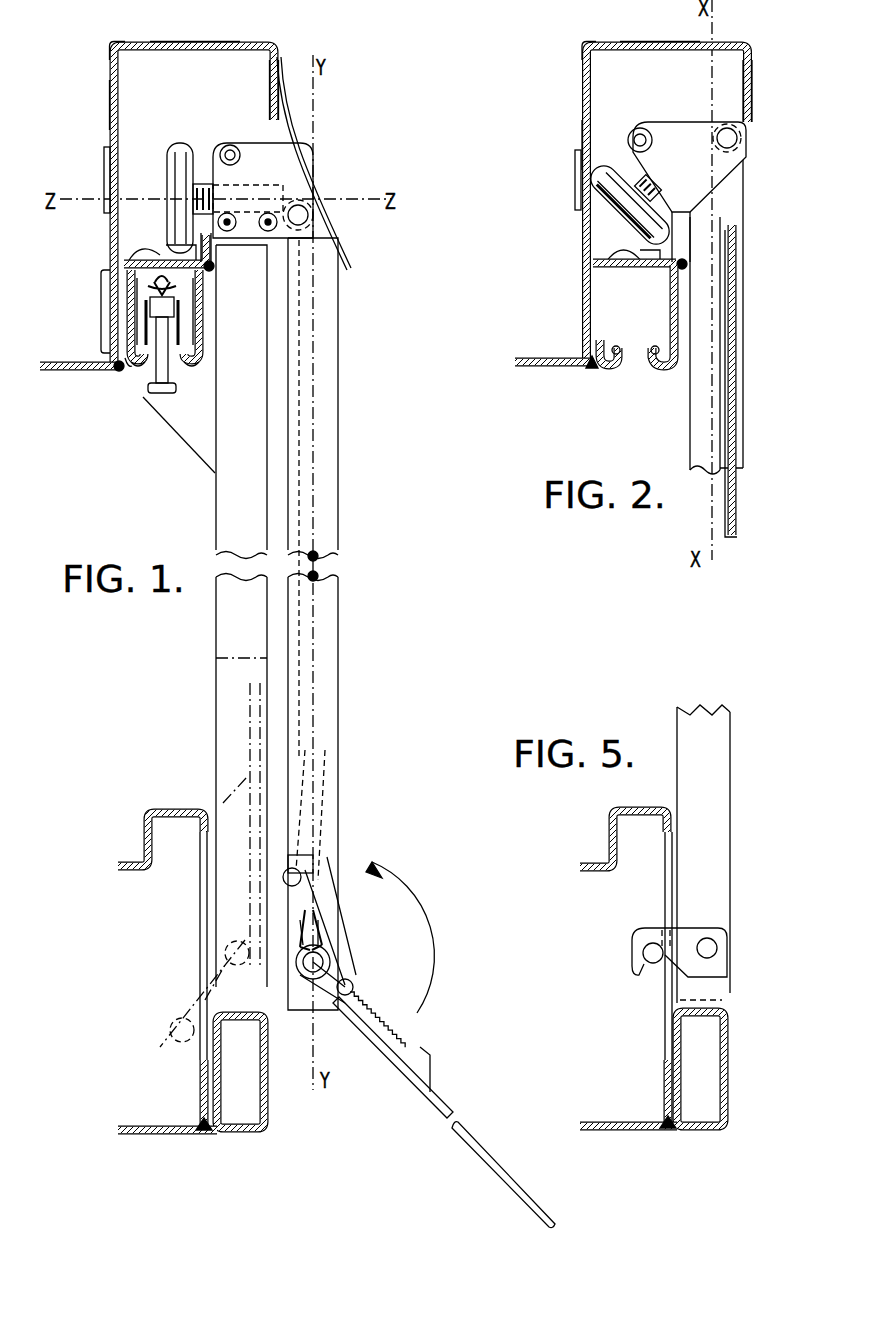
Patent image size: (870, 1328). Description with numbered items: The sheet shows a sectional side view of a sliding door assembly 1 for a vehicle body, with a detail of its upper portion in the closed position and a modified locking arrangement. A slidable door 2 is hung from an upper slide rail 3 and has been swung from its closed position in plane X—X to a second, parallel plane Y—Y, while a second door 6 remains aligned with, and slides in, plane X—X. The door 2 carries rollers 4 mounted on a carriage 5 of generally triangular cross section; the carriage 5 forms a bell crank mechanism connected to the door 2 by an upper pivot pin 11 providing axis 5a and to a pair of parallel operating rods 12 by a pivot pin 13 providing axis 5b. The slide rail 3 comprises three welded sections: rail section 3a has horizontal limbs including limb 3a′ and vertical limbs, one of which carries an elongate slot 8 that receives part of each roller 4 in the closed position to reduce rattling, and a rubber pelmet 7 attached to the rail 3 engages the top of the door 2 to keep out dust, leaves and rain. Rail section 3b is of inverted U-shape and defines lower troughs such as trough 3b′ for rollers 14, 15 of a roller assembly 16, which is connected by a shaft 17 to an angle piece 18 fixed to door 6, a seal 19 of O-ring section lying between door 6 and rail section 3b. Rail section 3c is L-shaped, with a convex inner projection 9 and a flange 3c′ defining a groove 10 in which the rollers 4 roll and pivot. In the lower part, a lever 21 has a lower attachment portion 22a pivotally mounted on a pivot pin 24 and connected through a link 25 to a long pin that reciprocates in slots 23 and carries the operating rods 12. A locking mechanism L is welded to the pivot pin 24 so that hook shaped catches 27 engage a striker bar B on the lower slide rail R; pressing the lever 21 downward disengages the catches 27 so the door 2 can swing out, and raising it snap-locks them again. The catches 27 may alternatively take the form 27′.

In FIG. 1, the sliding door assembly 1 is at (190, 626).
In FIG. 1, the slidable door 2 is at (336, 436).
In FIG. 2, the slidable door 2 is at (740, 326).
In FIG. 1, the upper slide rail 3 is at (108, 133).
In FIG. 2, the upper slide rail 3 is at (540, 89).
In FIG. 1, the rail section 3a is at (115, 43).
In FIG. 2, the rail section 3a is at (570, 25).
In FIG. 1, the horizontal limb 3a′ is at (62, 371).
In FIG. 2, the horizontal limb 3a′ is at (535, 405).
In FIG. 1, the rail section 3b is at (133, 370).
In FIG. 2, the rail section 3b is at (617, 372).
In FIG. 1, the lower trough 3b′ is at (128, 372).
In FIG. 2, the lower trough 3b′ is at (590, 405).
In FIG. 1, the rail section 3c is at (121, 263).
In FIG. 2, the rail section 3c is at (547, 267).
In FIG. 1, the flange 3c′ is at (214, 246).
In FIG. 2, the flange 3c′ is at (684, 238).
In FIG. 1, the roller 4 is at (157, 136).
In FIG. 2, the roller 4 is at (538, 185).
In FIG. 1, the carriage 5 is at (260, 177).
In FIG. 2, the carriage 5 is at (737, 175).
In FIG. 1, the pivot axis 5a is at (238, 153).
In FIG. 2, the pivot axis 5a is at (648, 135).
In FIG. 1, the pivot axis 5b is at (309, 215).
In FIG. 2, the pivot axis 5b is at (737, 140).
In FIG. 1, the second door 6 is at (190, 524).
In FIG. 1, the rubber pelmet 7 is at (310, 200).
In FIG. 1, the elongate slot 8 is at (112, 190).
In FIG. 2, the elongate slot 8 is at (587, 156).
In FIG. 1, the inner projection 9 is at (136, 250).
In FIG. 2, the inner projection 9 is at (615, 299).
In FIG. 1, the groove 10 is at (146, 237).
In FIG. 2, the groove 10 is at (645, 299).
In FIG. 1, the upper pivot pin 11 is at (180, 106).
In FIG. 2, the upper pivot pin 11 is at (636, 104).
In FIG. 1, the operating rod 12 is at (310, 513).
In FIG. 2, the operating rod 12 is at (738, 521).
In FIG. 1, the pivot pin 13 is at (300, 238).
In FIG. 2, the pivot pin 13 is at (680, 181).
In FIG. 1, the roller 14 is at (117, 368).
In FIG. 1, the roller 15 is at (198, 338).
In FIG. 1, the roller assembly 16 is at (101, 314).
In FIG. 1, the shaft 17 is at (165, 392).
In FIG. 1, the angle piece 18 is at (206, 437).
In FIG. 1, the seal 19 is at (213, 269).
In FIG. 2, the seal 19 is at (688, 272).
In FIG. 1, the lever 21 is at (492, 1160).
In FIG. 1, the lower attachment portion 22a is at (402, 1049).
In FIG. 1, the slot 23 is at (318, 780).
In FIG. 1, the pivot pin 24 is at (300, 996).
In FIG. 1, the link 25 is at (350, 958).
In FIG. 1, the hook shaped catch 27 is at (300, 856).
In FIG. 5, the catch 27′ is at (715, 966).
In FIG. 1, the striker bar B is at (166, 956).
In FIG. 1, the locking mechanism L is at (349, 940).
In FIG. 1, the lower slide rail R is at (216, 1163).
In FIG. 5, the lower slide rail R is at (673, 1163).